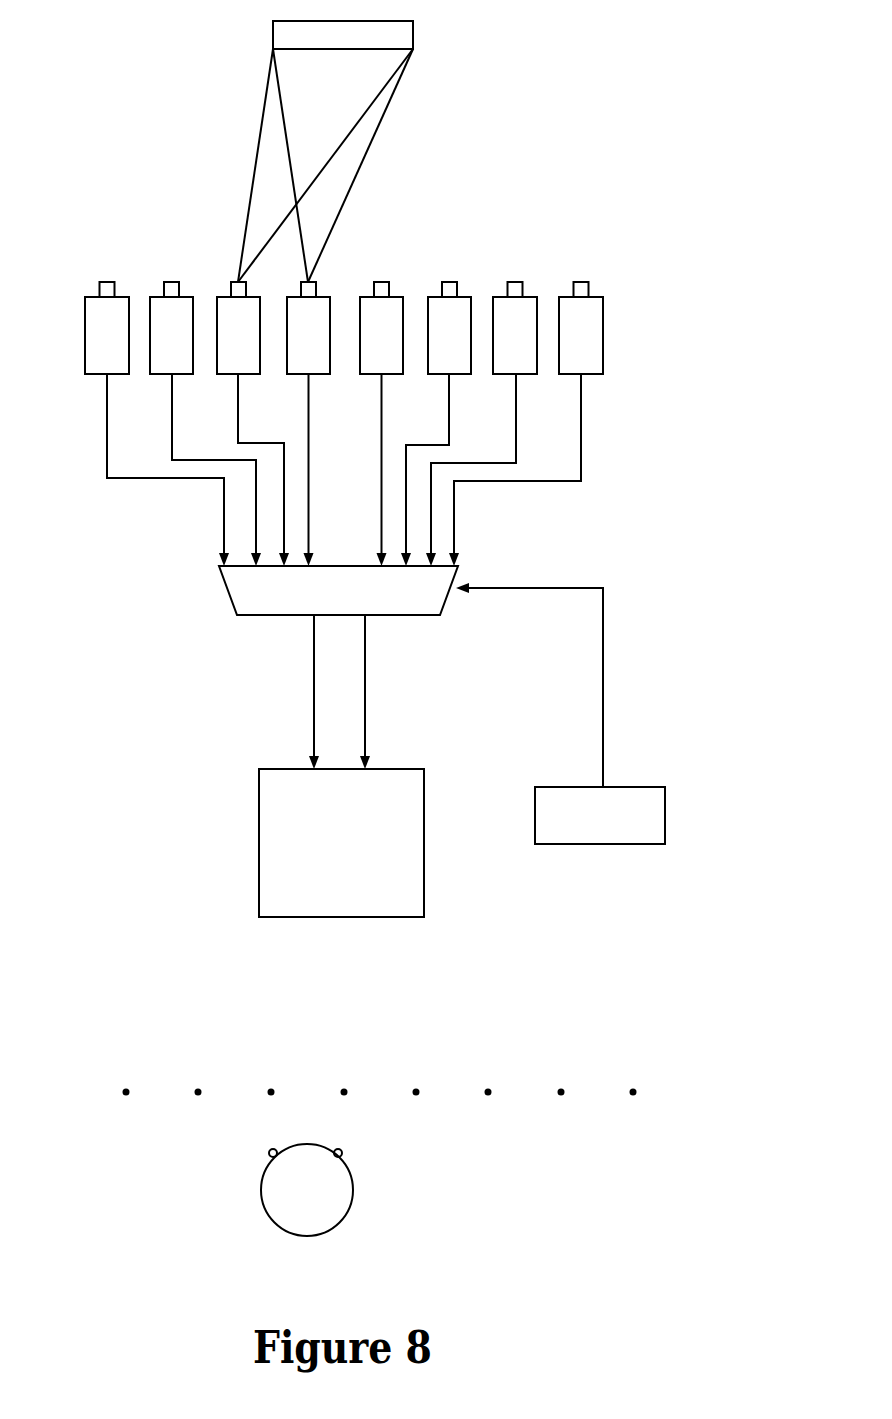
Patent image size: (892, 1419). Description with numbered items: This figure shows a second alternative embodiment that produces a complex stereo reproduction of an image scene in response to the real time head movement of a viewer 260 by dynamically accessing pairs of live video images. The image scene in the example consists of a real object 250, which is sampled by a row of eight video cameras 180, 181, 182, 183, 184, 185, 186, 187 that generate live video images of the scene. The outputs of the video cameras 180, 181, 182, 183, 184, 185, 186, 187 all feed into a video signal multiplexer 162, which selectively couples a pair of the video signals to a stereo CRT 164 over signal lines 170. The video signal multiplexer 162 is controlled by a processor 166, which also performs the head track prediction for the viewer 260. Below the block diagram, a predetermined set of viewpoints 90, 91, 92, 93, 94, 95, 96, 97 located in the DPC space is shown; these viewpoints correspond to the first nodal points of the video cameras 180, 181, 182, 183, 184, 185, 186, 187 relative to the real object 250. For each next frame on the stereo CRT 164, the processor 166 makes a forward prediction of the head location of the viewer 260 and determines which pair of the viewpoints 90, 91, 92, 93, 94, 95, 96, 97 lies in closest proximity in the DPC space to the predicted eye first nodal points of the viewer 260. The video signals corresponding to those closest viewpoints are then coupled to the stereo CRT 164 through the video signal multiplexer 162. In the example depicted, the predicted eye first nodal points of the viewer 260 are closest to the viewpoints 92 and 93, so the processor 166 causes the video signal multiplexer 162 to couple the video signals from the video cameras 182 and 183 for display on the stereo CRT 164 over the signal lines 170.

The real object 250 is at (420, 33).
The video camera 180 is at (88, 285).
The video camera 181 is at (157, 287).
The video camera 182 is at (222, 288).
The video camera 183 is at (323, 292).
The video camera 184 is at (398, 288).
The video camera 185 is at (467, 288).
The video camera 186 is at (533, 288).
The video camera 187 is at (597, 288).
The video signal multiplexer 162 is at (217, 585).
The signal lines 170 is at (303, 679).
The stereo CRT 164 is at (432, 805).
The processor 166 is at (677, 803).
The viewpoint 90 is at (133, 1082).
The viewpoint 91 is at (205, 1082).
The viewpoint 92 is at (278, 1082).
The viewpoint 93 is at (351, 1082).
The viewpoint 94 is at (423, 1082).
The viewpoint 95 is at (495, 1082).
The viewpoint 96 is at (568, 1082).
The viewpoint 97 is at (640, 1082).
The viewer 260 is at (360, 1180).